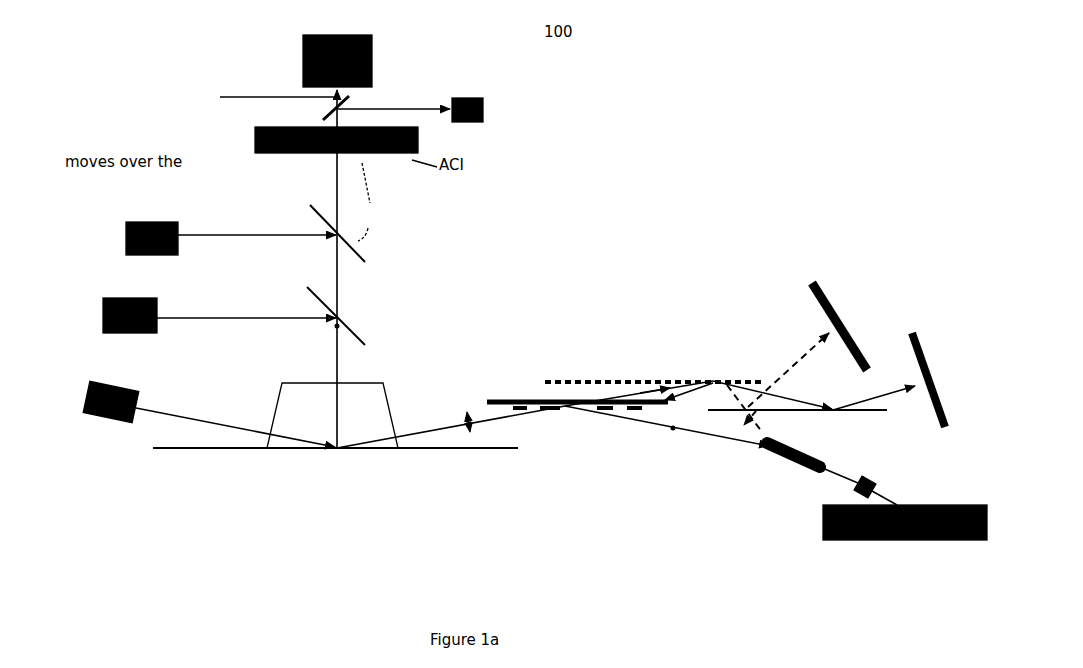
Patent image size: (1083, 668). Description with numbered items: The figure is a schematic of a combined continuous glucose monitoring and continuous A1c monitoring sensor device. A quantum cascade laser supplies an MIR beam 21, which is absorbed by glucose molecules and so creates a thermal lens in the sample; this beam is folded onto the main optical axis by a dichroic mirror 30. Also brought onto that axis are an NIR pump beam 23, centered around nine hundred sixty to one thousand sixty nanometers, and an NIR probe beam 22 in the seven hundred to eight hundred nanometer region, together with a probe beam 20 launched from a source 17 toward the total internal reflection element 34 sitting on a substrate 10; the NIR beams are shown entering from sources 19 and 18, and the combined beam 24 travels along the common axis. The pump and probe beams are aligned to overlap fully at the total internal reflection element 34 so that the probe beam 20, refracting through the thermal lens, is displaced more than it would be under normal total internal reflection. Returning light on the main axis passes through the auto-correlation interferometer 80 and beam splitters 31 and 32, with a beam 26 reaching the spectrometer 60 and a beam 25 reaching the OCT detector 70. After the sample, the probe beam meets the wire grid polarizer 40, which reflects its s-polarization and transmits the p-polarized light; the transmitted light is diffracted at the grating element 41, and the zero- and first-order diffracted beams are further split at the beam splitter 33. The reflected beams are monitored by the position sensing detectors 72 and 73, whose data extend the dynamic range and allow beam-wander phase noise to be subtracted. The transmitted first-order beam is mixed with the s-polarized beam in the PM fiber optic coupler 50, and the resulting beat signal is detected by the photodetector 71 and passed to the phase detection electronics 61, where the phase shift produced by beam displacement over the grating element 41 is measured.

The spectrometer 60 is at (371, 61).
The beam to spectrometer 26 is at (264, 98).
The beam splitter 32 is at (351, 101).
The OCT detector 70 is at (474, 110).
The auto-correlation interferometer 80 is at (315, 135).
The beam to OCT detector 25 is at (425, 113).
The beam splitter 31 is at (347, 220).
The combined beam 24 is at (338, 272).
The dichroic mirror 30 is at (352, 309).
The NIR source 19 is at (135, 238).
The NIR probe beam 22 is at (257, 239).
The NIR pump beam 23 is at (257, 239).
The MIR source 18 is at (130, 305).
The MIR light source/beam 21 is at (246, 323).
The light source 17 is at (111, 395).
The probe source/beam 20 is at (235, 427).
The Total Internal Reflection Element 34 is at (332, 402).
The substrate / stage 10 is at (335, 461).
The Wire Grid Polarizer 40 is at (557, 393).
The grating element 41 is at (642, 363).
The beam splitter 33 is at (797, 423).
The Position Sensing Detector 73 is at (820, 303).
The Position Sensing Detector 72 is at (919, 366).
The PM fiber optic coupler 50 is at (801, 468).
The Photo Detector 71 is at (890, 487).
The phase detection electronics 61 is at (905, 535).